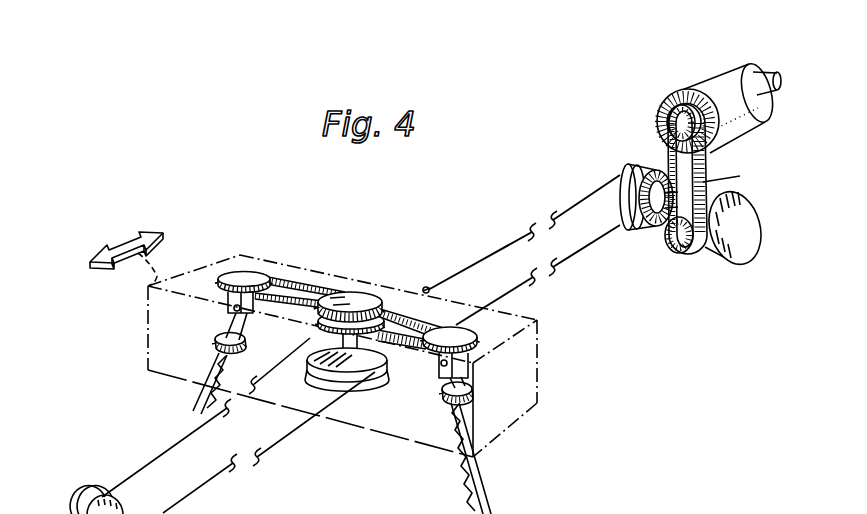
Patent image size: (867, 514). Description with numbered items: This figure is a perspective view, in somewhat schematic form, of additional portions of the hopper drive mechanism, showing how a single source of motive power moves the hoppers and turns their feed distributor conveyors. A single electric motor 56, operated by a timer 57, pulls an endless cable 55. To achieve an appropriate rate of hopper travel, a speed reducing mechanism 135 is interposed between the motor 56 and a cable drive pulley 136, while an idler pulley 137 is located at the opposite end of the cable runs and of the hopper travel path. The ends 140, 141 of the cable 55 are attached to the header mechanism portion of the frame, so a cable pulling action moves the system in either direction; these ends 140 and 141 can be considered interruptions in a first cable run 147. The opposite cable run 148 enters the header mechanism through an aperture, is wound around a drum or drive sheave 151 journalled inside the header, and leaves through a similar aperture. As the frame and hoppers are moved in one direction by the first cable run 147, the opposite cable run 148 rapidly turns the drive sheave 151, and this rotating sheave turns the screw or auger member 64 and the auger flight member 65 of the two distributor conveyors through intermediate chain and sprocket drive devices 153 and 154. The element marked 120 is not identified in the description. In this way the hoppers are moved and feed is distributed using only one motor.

The endless cable 55 is at (472, 246).
The electric motor 56 is at (707, 97).
The timer 57 is at (762, 65).
The screw or auger member 64 is at (193, 403).
The auger flight member 65 is at (478, 464).
The frame member 120 is at (374, 506).
The speed reducing mechanism 135 is at (733, 243).
The cable drive pulley 136 is at (626, 168).
The idler pulley 137 is at (78, 497).
The cable end 140 is at (425, 287).
The cable end 141 is at (316, 343).
The first cable run 147 is at (425, 289).
The opposite cable run 148 is at (291, 435).
The drum or drive sheave 151 is at (281, 408).
The chain and sprocket drive device 153 is at (417, 350).
The chain and sprocket drive device 154 is at (333, 290).